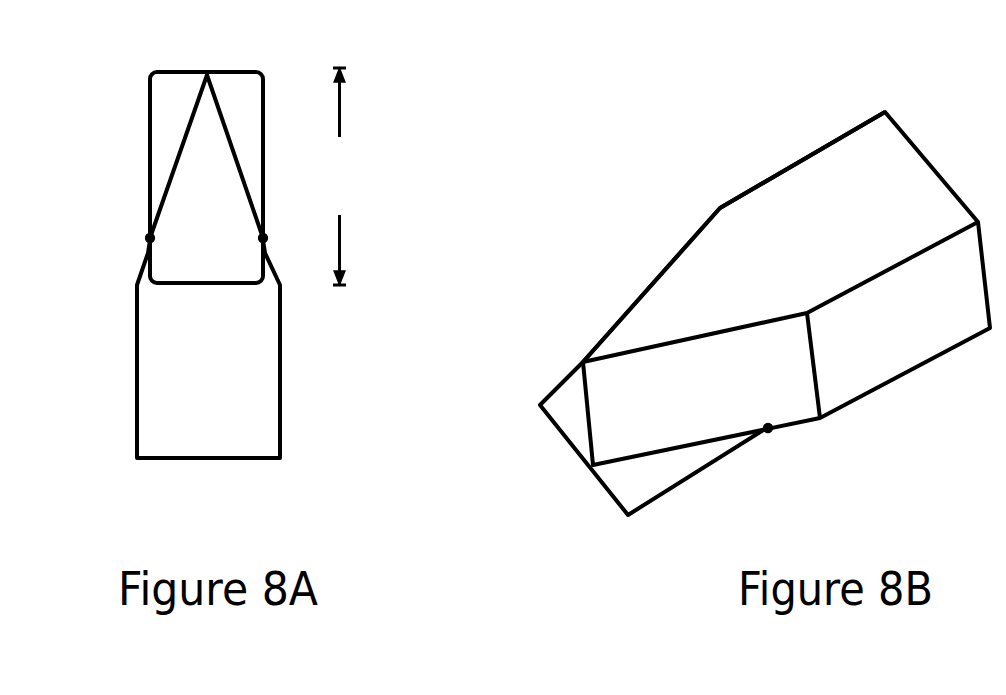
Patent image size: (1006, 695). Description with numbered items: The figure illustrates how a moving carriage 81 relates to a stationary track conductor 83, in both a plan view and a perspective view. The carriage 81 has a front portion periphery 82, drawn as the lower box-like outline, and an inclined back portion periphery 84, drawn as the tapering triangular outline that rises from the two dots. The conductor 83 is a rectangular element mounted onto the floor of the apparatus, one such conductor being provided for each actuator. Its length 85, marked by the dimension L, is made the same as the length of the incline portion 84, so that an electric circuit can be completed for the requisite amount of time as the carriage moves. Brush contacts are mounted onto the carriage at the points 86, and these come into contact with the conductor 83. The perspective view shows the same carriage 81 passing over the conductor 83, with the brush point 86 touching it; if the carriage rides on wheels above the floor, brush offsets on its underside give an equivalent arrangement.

In FIG. 8A, the carriage 81 is at (248, 421).
In FIG. 8B, the carriage 81 is at (786, 288).
In FIG. 8A, the front portion periphery 82 is at (136, 333).
In FIG. 8A, the conductor 83 is at (150, 163).
In FIG. 8B, the conductor 83 is at (640, 483).
In FIG. 8A, the back portion periphery / incline portion 84 is at (227, 133).
In FIG. 8B, the back portion periphery / incline portion 84 is at (672, 255).
In FIG. 8A, the length of conductor 85 is at (337, 160).
In FIG. 8A, the brush contact points 86 is at (261, 243).
In FIG. 8B, the brush contact points 86 is at (772, 432).